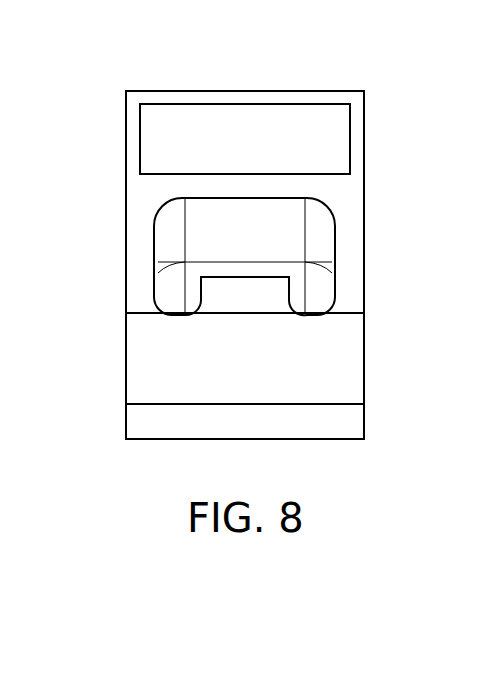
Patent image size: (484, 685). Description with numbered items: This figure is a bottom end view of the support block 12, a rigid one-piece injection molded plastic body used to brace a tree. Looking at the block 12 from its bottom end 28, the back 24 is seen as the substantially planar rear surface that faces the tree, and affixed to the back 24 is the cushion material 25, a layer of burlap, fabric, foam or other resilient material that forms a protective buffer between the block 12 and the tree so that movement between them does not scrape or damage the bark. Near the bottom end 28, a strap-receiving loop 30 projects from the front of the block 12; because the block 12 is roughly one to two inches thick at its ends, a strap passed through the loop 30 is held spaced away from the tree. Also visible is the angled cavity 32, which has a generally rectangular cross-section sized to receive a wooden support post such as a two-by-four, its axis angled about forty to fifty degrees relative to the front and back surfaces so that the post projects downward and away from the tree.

The support block 12 is at (213, 219).
The back 24 is at (239, 456).
The cushion material 25 is at (325, 433).
The bottom end 28 is at (266, 379).
The strap-receiving loop 30 is at (252, 277).
The angled cavity 32 is at (340, 138).